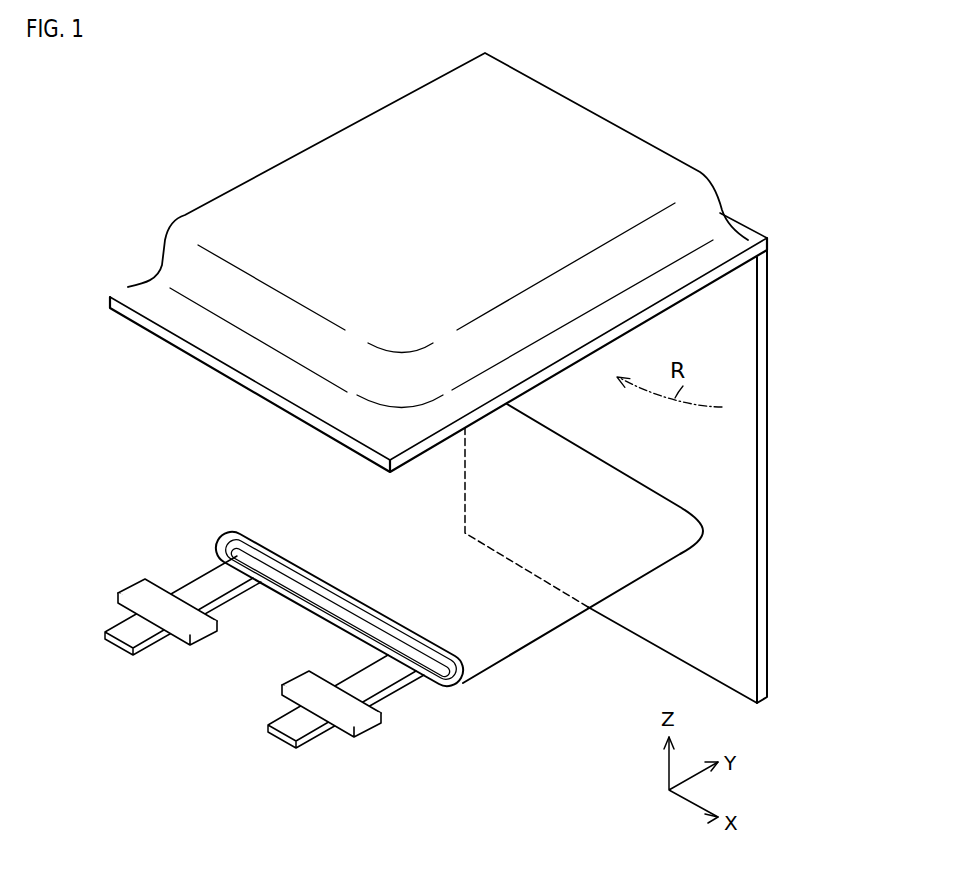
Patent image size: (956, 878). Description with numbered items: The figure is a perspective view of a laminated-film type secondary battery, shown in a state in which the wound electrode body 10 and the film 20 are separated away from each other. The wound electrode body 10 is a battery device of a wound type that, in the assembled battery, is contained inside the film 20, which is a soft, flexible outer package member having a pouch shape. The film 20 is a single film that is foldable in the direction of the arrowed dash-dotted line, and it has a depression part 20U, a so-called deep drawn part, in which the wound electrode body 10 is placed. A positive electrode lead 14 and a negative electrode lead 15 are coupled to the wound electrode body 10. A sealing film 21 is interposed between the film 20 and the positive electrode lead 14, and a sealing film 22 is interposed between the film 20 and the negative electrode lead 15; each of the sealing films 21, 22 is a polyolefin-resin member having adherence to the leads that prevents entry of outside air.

The wound electrode body 10 is at (523, 674).
The positive electrode lead 14 is at (128, 634).
The negative electrode lead 15 is at (288, 730).
The film 20 is at (582, 130).
The depression part 20U is at (333, 150).
The sealing film 21 is at (134, 596).
The sealing film 22 is at (360, 716).